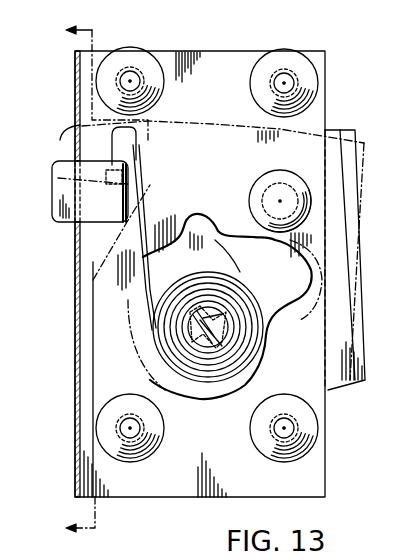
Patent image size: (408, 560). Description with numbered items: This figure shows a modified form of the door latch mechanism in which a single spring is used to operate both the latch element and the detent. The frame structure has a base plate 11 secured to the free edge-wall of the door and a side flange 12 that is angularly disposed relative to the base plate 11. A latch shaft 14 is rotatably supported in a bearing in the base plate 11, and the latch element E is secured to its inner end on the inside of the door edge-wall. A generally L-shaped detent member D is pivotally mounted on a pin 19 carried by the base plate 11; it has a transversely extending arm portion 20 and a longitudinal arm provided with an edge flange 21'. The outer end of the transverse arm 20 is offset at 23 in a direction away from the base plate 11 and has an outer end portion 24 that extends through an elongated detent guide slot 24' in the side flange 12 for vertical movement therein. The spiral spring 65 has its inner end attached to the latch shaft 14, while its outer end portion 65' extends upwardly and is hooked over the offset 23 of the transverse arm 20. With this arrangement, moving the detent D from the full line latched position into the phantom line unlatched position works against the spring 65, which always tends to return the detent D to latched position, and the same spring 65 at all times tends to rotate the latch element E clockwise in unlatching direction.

The base plate 11 is at (312, 488).
The side flange 12 is at (75, 470).
The latch shaft 14 is at (282, 343).
The pin 19 is at (283, 190).
The transversely extending arm portion 20 is at (213, 130).
The edge flange 21' is at (359, 260).
The offset 23 is at (125, 225).
The outer end portion 24 is at (70, 191).
The detent guide slot 24' is at (83, 132).
The spring 65 is at (180, 327).
The outer end portion 65' is at (159, 237).
The detent member D is at (318, 130).
The latch element E is at (140, 298).